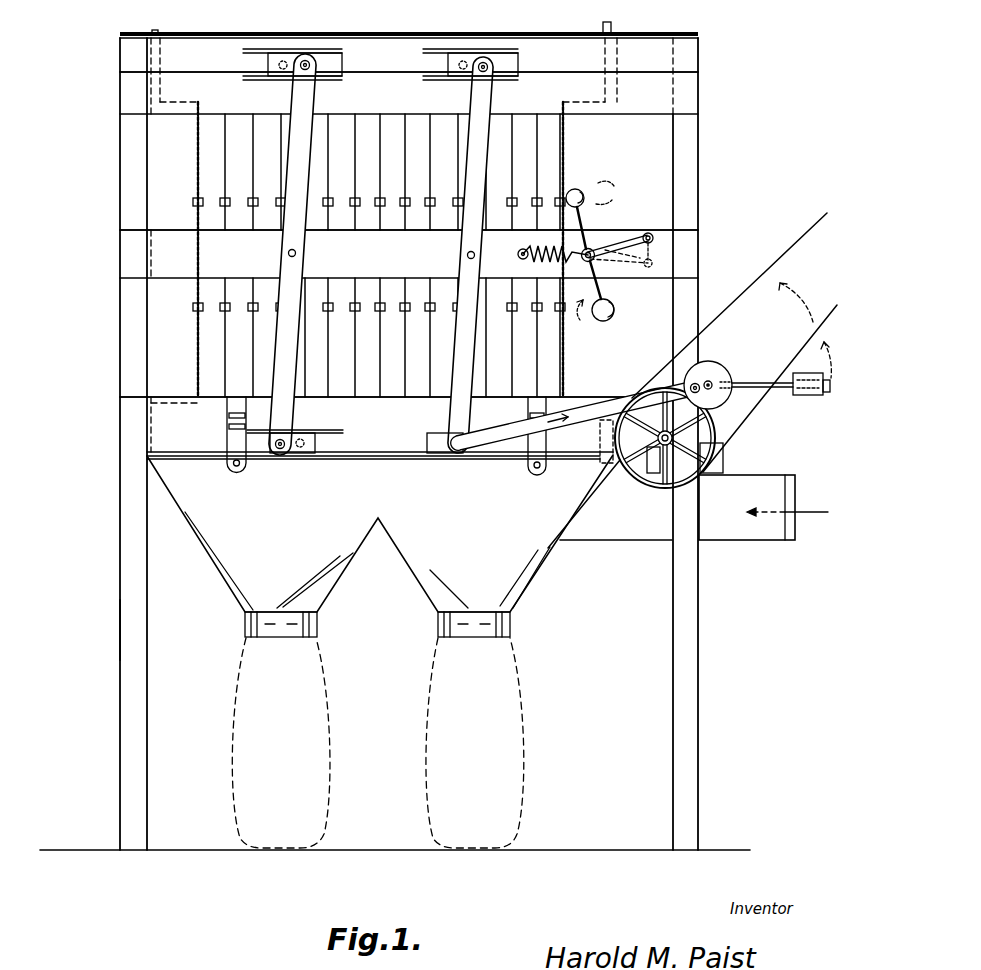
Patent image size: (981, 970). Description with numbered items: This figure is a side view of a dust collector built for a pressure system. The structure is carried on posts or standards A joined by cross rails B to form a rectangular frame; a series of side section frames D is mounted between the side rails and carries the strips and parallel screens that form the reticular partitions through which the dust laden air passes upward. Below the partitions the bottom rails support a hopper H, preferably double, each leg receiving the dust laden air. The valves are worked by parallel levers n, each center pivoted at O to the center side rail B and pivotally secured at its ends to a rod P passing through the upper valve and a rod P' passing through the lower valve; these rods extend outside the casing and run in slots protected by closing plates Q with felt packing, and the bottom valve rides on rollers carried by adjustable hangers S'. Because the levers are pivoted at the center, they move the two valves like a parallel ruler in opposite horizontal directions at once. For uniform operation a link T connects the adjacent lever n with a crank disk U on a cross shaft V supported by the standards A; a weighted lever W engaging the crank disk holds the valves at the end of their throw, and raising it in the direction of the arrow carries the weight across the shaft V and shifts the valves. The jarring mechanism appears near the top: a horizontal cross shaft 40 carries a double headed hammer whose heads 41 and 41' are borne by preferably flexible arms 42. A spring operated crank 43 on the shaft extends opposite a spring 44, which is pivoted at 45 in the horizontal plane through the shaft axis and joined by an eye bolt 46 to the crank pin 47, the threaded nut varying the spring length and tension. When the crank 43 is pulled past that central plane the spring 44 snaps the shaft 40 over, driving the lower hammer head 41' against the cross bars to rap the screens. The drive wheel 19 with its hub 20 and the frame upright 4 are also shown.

The posts or standards A is at (697, 643).
The frame upright 4 is at (128, 627).
The cross rails B is at (409, 253).
The frames D is at (379, 255).
The parallel levers n is at (381, 254).
The lever pivot O is at (296, 253).
The upper valve rod P is at (424, 61).
The lower valve rod P' is at (371, 468).
The closing plates Q is at (268, 62).
The adjustable hangers S' is at (380, 436).
The link T is at (515, 426).
The crank disk U is at (712, 380).
The cross shaft V is at (716, 382).
The weighted lever W is at (781, 396).
The drive wheel 19 is at (652, 490).
The wheel hub 20 is at (657, 439).
The cross shaft 40 is at (595, 280).
The upper hammer head 41 is at (590, 189).
The lower hammer head 41' is at (609, 311).
The hammer arms 42 is at (588, 228).
The spring-operated crank 43 is at (618, 240).
The spring 44 is at (550, 249).
The spring pivot 45 is at (518, 257).
The eye bolt 46 is at (589, 249).
The crank pin 47 is at (655, 240).
The hopper H is at (380, 650).